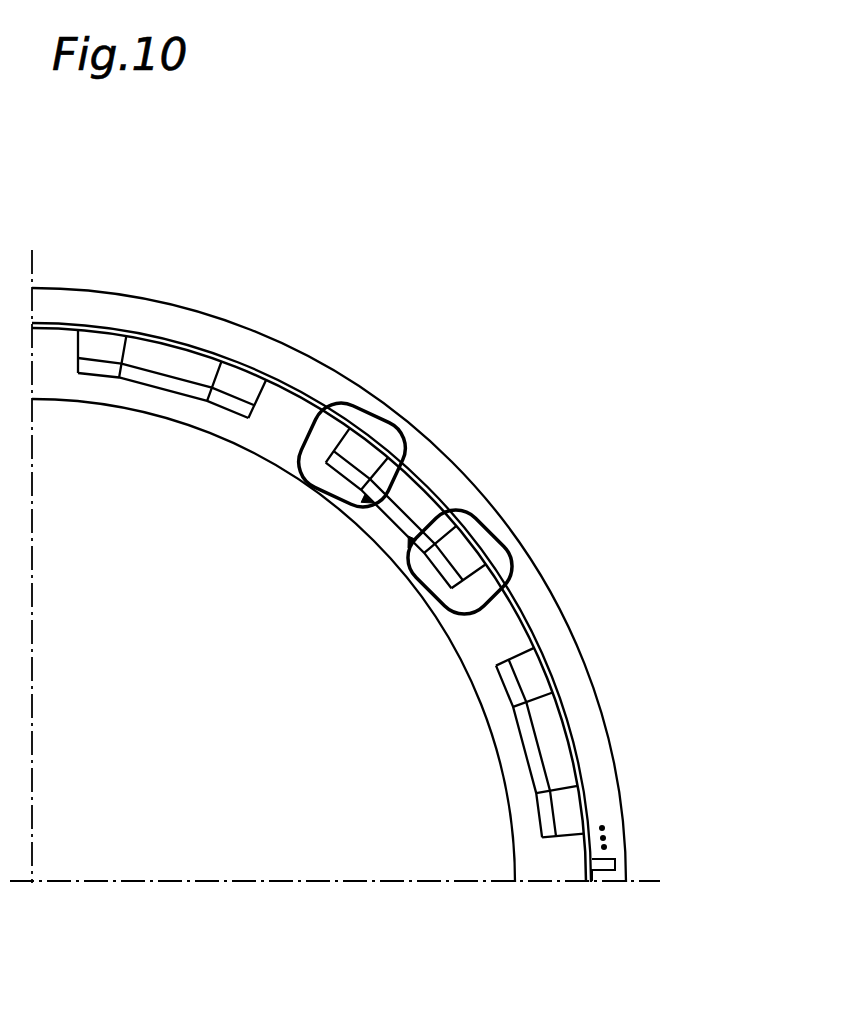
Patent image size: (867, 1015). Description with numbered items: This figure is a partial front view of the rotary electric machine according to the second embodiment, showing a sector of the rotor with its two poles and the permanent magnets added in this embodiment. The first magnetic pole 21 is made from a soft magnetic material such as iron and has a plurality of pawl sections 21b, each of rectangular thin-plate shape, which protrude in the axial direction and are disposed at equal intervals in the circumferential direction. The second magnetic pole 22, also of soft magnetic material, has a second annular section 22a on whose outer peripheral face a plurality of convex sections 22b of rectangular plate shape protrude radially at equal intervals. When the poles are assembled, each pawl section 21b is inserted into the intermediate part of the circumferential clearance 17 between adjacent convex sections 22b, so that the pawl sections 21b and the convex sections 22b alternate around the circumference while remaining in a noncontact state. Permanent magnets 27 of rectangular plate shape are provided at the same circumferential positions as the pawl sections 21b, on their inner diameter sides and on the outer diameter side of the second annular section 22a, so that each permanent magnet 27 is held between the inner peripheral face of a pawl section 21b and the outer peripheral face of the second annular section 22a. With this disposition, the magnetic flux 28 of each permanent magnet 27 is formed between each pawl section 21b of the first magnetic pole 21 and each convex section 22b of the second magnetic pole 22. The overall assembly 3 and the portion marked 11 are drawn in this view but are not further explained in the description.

The stator 3 is at (608, 718).
The stator core 11 is at (592, 843).
The circumferential clearance 17 is at (100, 345).
The first magnetic pole 21 is at (418, 493).
The pawl section 21b is at (173, 353).
The second magnetic pole 22 is at (455, 662).
The second annular section 22a is at (495, 715).
The convex section 22b is at (52, 345).
The permanent magnet 27 is at (158, 387).
The magnetic flux 28 is at (322, 490).